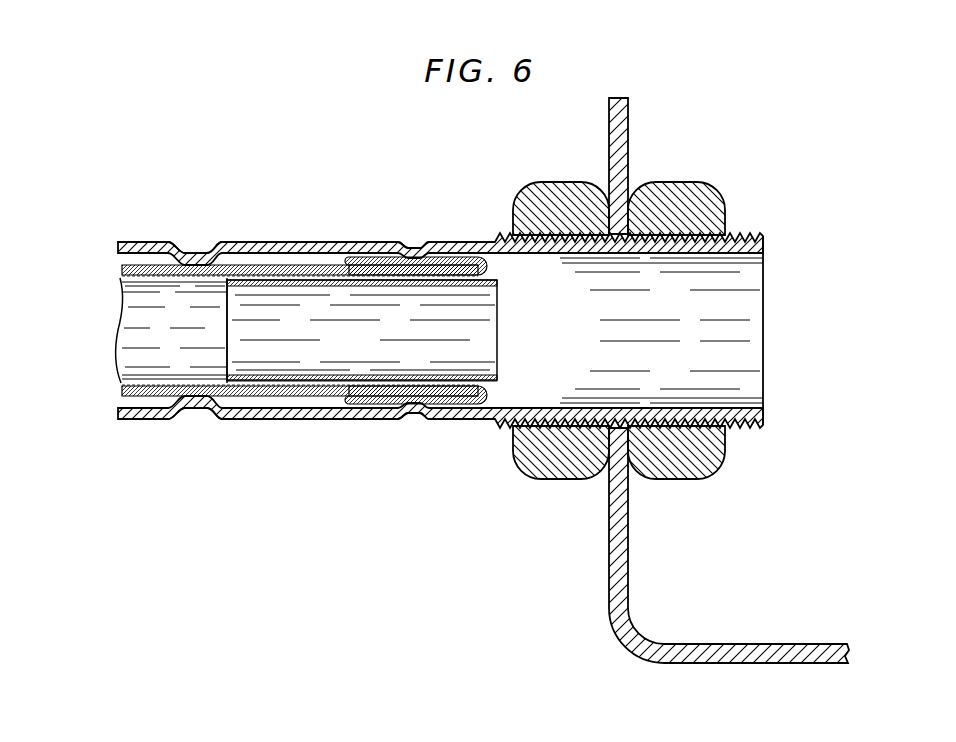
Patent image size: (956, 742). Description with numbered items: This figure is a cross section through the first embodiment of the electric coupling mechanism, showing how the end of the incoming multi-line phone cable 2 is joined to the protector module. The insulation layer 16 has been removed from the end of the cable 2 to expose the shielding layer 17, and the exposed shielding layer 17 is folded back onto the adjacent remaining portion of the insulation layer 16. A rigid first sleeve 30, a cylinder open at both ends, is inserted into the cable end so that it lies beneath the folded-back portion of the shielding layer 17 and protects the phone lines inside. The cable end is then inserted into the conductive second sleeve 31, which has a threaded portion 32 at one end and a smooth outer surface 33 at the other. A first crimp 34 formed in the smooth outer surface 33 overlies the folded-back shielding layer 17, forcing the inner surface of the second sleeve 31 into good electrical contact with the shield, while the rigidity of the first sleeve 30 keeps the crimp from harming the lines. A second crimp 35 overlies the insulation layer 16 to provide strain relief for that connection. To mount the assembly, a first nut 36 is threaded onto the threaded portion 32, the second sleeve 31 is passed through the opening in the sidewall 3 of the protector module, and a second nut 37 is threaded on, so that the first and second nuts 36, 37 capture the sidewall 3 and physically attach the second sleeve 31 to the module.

The incoming multi-line phone cable 2 is at (100, 326).
The sidewall 3 is at (628, 125).
The insulation layer 16 is at (122, 268).
The shielding layer 17 is at (489, 267).
The first sleeve 30 is at (497, 292).
The second sleeve 31 is at (748, 256).
The threaded portion 32 is at (756, 236).
The smooth outer surface 33 is at (300, 241).
The first crimp 34 is at (410, 244).
The second crimp 35 is at (183, 251).
The first nut 36 is at (531, 194).
The second nut 37 is at (697, 182).